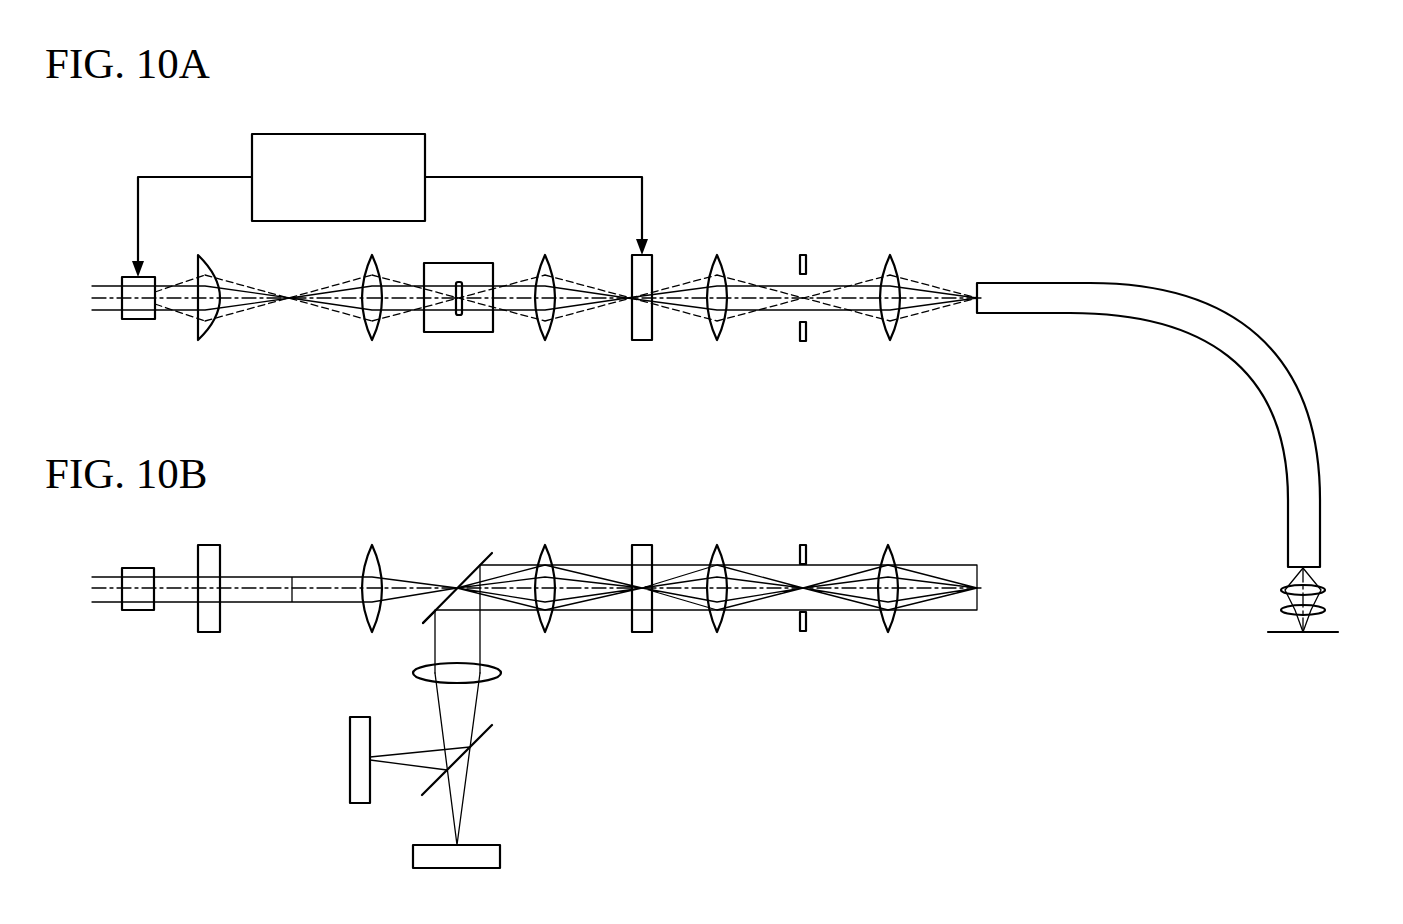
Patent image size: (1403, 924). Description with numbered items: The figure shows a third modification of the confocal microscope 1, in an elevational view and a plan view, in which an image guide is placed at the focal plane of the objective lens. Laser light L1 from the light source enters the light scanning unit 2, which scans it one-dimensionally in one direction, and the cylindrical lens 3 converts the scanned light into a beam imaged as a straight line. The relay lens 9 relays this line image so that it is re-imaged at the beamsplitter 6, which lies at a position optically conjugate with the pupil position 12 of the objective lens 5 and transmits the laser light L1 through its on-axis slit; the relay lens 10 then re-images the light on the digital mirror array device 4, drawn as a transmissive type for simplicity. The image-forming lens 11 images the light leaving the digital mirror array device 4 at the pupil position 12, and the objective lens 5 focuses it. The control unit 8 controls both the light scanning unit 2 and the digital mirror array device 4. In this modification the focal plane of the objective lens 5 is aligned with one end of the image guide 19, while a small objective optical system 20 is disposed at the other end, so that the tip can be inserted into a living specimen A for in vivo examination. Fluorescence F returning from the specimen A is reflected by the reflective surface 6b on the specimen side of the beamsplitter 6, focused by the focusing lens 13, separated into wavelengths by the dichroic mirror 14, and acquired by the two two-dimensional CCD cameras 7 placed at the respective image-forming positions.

In FIG. 10A, the confocal microscope 1 is at (866, 162).
In FIG. 10B, the confocal microscope 1 is at (876, 758).
In FIG. 10A, the light scanning unit 2 is at (136, 320).
In FIG. 10B, the light scanning unit 2 is at (136, 611).
In FIG. 10A, the cylindrical lens 3 is at (214, 330).
In FIG. 10B, the cylindrical lens 3 is at (208, 633).
In FIG. 10A, the digital mirror array device 4 is at (645, 341).
In FIG. 10B, the digital mirror array device 4 is at (642, 633).
In FIG. 10A, the objective lens 5 is at (899, 330).
In FIG. 10B, the objective lens 5 is at (895, 630).
In FIG. 10A, the beamsplitter 6 is at (472, 260).
In FIG. 10B, the beamsplitter 6 is at (470, 563).
In FIG. 10B, the reflective surface 6b is at (425, 622).
In FIG. 10B, the two-dimensional CCD camera 7 is at (350, 778).
In FIG. 10A, the control unit 8 is at (354, 134).
In FIG. 10A, the relay lens 9 is at (380, 338).
In FIG. 10B, the relay lens 9 is at (365, 553).
In FIG. 10A, the relay lens 10 is at (553, 338).
In FIG. 10B, the relay lens 10 is at (551, 632).
In FIG. 10A, the image-forming lens 11 is at (725, 338).
In FIG. 10B, the image-forming lens 11 is at (716, 633).
In FIG. 10A, the pupil position 12 is at (806, 343).
In FIG. 10B, the pupil position 12 is at (803, 633).
In FIG. 10B, the focusing lens 13 is at (497, 681).
In FIG. 10B, the dichroic mirror 14 is at (490, 740).
In FIG. 10A, the image guide 19 is at (1288, 503).
In FIG. 10A, the small objective optical system 20 is at (1272, 578).
In FIG. 10A, the specimen A is at (1330, 632).
In FIG. 10B, the fluorescence F is at (481, 640).
In FIG. 10A, the laser light L1 is at (283, 336).